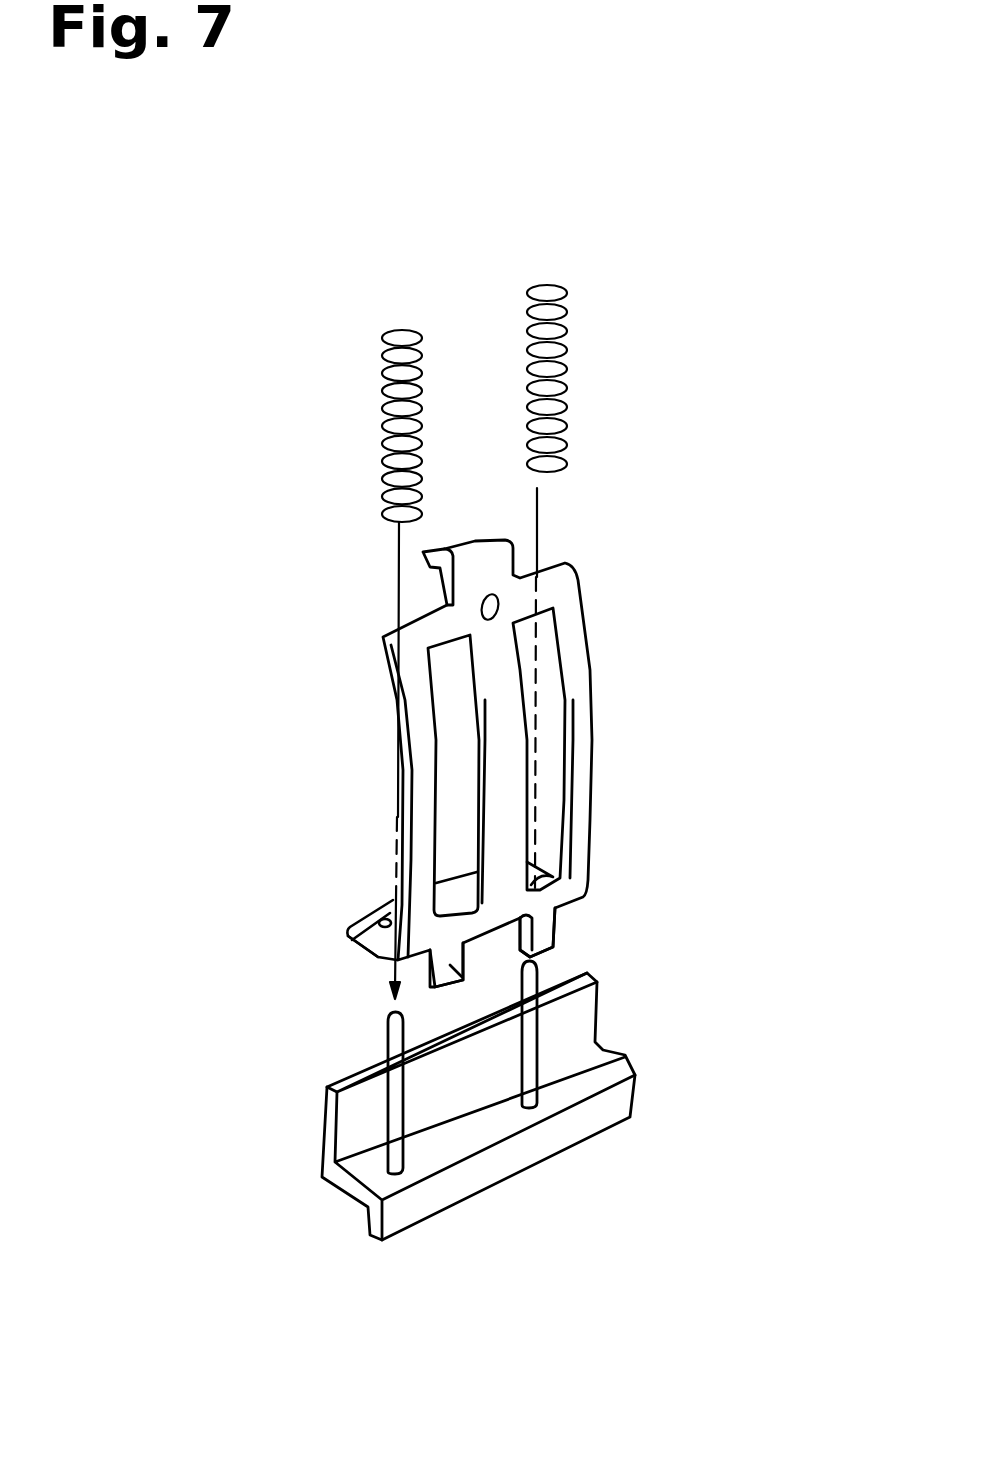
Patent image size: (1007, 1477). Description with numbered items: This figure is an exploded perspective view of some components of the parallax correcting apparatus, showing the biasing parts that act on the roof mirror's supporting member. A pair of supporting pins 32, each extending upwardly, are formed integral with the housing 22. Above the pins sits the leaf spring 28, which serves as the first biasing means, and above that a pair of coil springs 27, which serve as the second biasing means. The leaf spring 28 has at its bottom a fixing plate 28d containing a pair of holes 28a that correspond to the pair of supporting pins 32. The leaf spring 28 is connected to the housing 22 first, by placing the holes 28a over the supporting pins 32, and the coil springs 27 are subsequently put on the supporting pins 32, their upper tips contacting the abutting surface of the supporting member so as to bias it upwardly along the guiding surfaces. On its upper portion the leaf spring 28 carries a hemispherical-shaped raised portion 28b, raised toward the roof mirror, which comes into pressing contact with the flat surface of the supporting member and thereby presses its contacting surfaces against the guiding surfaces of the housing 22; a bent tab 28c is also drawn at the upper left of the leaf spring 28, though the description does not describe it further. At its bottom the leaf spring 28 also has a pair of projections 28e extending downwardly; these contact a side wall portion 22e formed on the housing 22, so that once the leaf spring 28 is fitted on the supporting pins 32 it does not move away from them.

The coil springs 27 is at (527, 293).
The leaf spring 28 is at (600, 739).
The holes 28a is at (573, 867).
The raised portion 28b is at (498, 603).
The bent tab 28c is at (430, 547).
The fixing plate 28d is at (350, 940).
The projections 28e is at (520, 1003).
The housing 22 is at (382, 1238).
The side wall portion 22e is at (618, 1098).
The supporting pins 32 is at (528, 1088).